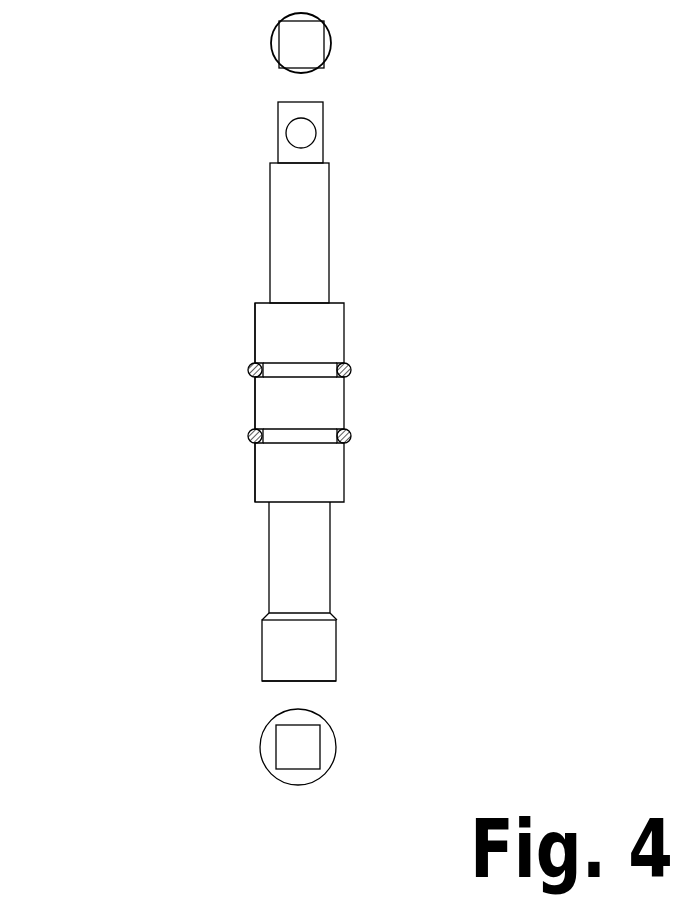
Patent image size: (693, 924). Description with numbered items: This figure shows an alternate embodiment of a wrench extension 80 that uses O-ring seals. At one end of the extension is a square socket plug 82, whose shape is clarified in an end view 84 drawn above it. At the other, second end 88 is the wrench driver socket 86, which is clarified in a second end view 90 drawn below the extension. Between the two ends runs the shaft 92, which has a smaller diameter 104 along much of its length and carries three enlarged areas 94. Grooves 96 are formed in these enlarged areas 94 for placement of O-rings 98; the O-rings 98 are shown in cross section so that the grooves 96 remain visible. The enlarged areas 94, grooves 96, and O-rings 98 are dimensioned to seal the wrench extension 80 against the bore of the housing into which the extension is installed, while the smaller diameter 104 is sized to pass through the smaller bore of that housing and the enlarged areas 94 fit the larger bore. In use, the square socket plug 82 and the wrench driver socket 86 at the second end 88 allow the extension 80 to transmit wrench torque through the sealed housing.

The wrench extension 80 is at (165, 192).
The square socket plug 82 is at (287, 110).
The end view 84 is at (383, 43).
The wrench driver socket 86 is at (336, 695).
The second end 88 is at (228, 675).
The end view 90 is at (380, 750).
The shaft 92 is at (185, 291).
The enlarged areas 94 is at (255, 480).
The grooves 96 is at (290, 370).
The O-rings 98 is at (352, 369).
The smaller diameter 104 is at (243, 191).